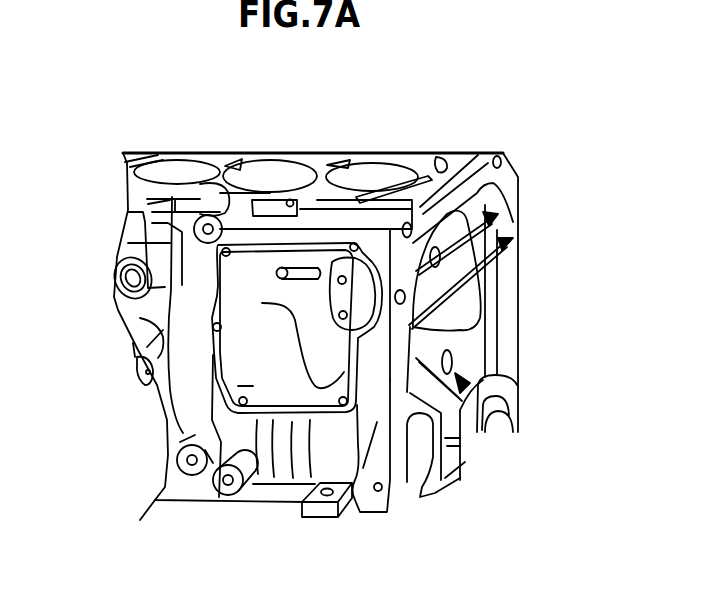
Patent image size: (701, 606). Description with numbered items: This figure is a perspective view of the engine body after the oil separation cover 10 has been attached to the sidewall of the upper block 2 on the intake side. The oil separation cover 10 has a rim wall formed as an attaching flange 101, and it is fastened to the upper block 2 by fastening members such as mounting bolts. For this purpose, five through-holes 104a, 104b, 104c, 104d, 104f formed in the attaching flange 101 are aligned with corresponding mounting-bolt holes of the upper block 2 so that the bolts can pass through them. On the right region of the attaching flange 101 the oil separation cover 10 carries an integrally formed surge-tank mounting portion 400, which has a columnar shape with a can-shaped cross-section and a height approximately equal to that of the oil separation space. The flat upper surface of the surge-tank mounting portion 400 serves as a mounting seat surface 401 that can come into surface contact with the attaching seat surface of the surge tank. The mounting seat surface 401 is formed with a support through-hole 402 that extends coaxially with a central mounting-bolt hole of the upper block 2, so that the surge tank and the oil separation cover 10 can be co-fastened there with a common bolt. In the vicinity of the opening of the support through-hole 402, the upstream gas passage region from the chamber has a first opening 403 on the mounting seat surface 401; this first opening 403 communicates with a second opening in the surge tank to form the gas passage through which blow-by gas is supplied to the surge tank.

The upper block 2 is at (467, 140).
The oil separation cover 10 is at (220, 278).
The attaching flange 101 is at (287, 243).
The through-hole 104a is at (246, 247).
The through-hole 104b is at (213, 327).
The through-hole 104c is at (212, 488).
The through-hole 104d is at (363, 425).
The through-hole 104f is at (360, 236).
The surge-tank mounting portion 400 is at (347, 297).
The mounting seat surface 401 is at (362, 330).
The support through-hole 402 is at (350, 366).
The first opening 403 is at (345, 280).